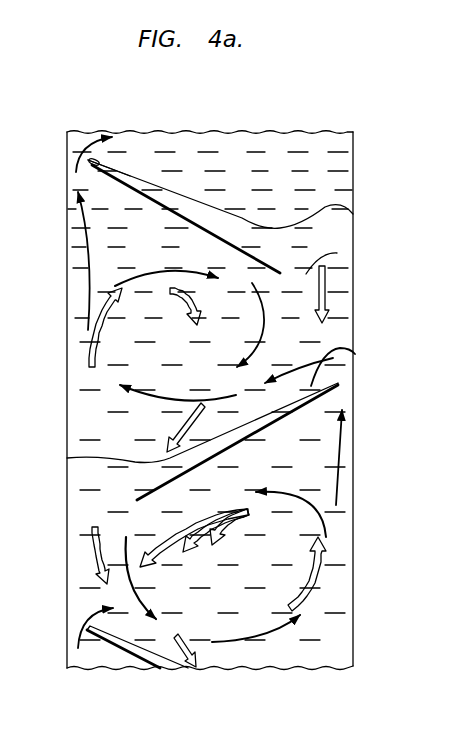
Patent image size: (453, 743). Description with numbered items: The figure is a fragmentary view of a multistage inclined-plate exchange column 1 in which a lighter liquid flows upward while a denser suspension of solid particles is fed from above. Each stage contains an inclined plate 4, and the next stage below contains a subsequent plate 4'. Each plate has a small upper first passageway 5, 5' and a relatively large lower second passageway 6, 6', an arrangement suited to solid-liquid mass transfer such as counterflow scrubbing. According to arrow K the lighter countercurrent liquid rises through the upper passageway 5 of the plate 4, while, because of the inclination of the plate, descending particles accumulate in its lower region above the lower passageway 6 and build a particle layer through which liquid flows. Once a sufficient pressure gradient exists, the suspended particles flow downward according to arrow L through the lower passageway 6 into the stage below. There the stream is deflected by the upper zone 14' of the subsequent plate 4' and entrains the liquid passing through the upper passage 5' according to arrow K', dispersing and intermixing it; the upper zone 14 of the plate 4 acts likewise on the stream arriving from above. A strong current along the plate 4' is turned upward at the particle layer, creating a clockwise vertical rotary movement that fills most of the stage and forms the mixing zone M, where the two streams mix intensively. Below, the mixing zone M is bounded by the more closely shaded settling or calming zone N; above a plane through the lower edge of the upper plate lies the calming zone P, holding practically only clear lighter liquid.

The exchange column 1 is at (67, 372).
The plate 4 is at (220, 433).
The subsequent plate 4' is at (202, 441).
The first passageway 5 is at (71, 156).
The upper passage 5' is at (334, 390).
The second passageway 6 is at (344, 255).
The lower passageway 6' is at (111, 574).
The upper zone 14 is at (119, 140).
The upper zone of the subsequent plate 14' is at (356, 361).
The countercurrent liquid flow K is at (132, 310).
The countercurrent liquid flow through upper passage K' is at (371, 435).
The particle suspension flow L is at (318, 300).
The mixing zone M is at (207, 456).
The settling or calming zone N is at (211, 362).
The settling or calming zone P is at (203, 320).